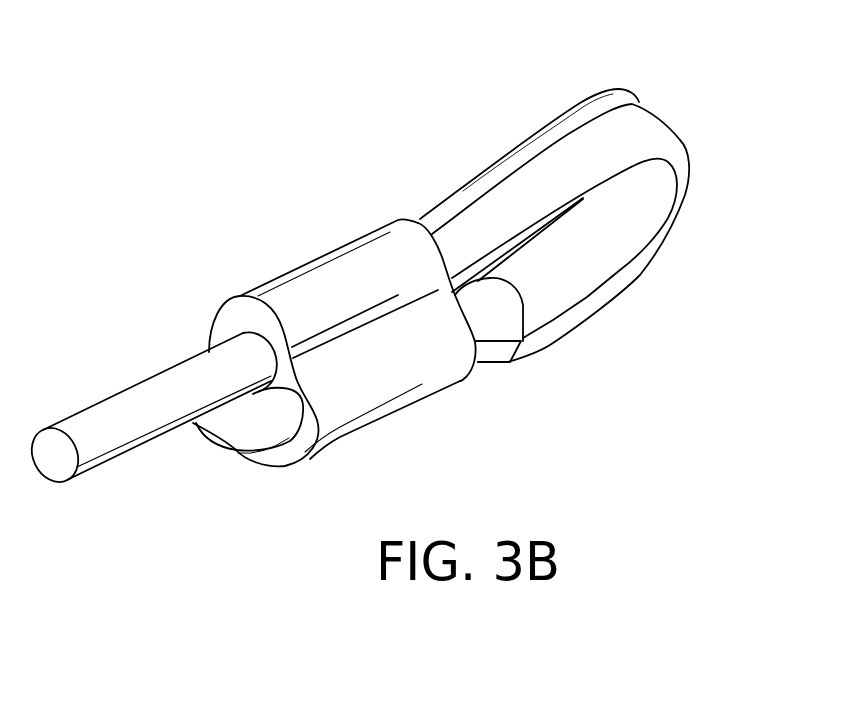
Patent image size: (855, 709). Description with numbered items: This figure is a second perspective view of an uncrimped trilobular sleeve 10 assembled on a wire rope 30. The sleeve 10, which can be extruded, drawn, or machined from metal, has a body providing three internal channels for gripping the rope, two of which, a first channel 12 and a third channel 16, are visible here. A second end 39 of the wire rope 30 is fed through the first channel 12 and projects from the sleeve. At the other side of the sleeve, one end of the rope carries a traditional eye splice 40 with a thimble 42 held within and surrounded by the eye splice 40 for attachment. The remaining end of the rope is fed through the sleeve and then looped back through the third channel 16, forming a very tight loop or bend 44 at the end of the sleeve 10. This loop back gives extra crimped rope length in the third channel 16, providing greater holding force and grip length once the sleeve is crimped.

The sleeve 10 is at (390, 420).
The first channel 12 is at (240, 330).
The third channel 16 is at (303, 437).
The wire rope 30 is at (157, 388).
The second end 39 is at (196, 366).
The eye splice 40 is at (647, 125).
The thimble 42 is at (542, 127).
The loop or bend 44 is at (225, 432).